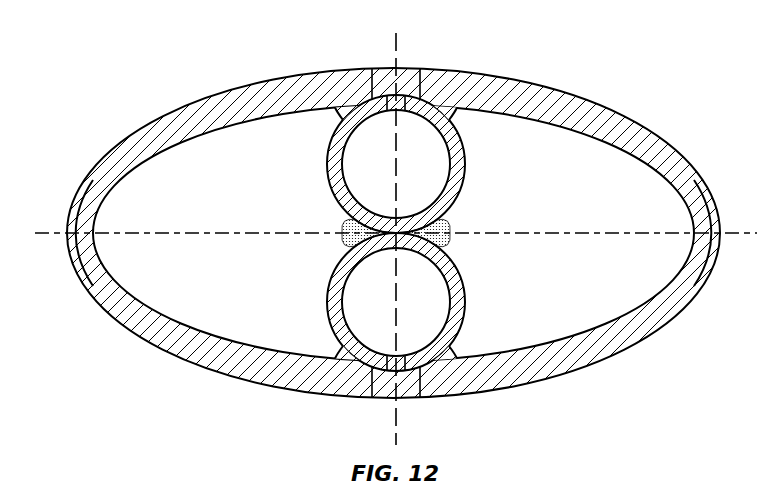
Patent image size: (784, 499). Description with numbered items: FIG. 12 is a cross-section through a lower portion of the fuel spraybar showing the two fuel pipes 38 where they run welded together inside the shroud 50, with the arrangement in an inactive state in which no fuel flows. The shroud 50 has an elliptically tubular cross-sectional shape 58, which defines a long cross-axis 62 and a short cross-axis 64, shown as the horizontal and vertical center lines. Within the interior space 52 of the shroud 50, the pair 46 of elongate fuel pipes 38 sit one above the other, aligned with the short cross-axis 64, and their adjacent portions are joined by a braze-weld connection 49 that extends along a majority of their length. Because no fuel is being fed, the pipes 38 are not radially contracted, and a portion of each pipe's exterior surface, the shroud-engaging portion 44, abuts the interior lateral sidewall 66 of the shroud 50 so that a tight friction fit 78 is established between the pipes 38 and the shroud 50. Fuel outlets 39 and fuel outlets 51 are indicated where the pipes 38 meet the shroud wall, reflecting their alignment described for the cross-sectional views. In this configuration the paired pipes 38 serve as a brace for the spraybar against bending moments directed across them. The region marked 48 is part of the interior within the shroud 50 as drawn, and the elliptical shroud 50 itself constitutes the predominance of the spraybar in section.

The tight friction fit 78 is at (582, 56).
The elliptically tubular cross-sectional shape 58 is at (76, 137).
The interior lateral sidewall 66 is at (237, 123).
The long cross-axis 62 is at (65, 231).
The shroud 50 is at (703, 257).
The fuel pipe 38 is at (333, 185).
The pair of elongate fuel pipes 46 is at (468, 124).
The fuel outlets 51 is at (383, 73).
The interior space 48 is at (288, 340).
The shroud-engaging portion 44 is at (432, 102).
The fuel outlets 39 is at (394, 108).
The braze-weld connection 49 is at (453, 222).
The interior space 52 is at (594, 206).
The short cross-axis 64 is at (397, 410).